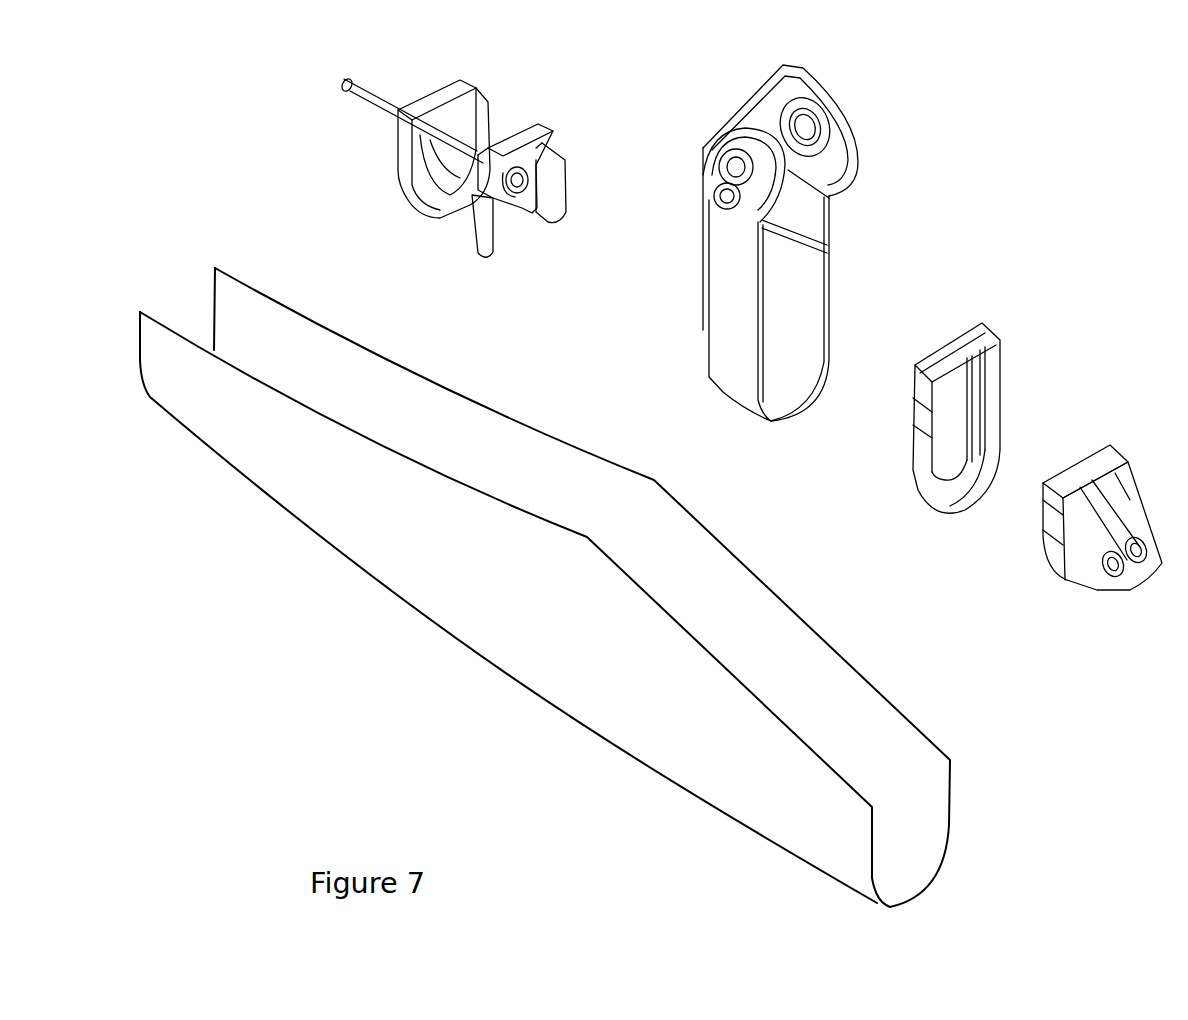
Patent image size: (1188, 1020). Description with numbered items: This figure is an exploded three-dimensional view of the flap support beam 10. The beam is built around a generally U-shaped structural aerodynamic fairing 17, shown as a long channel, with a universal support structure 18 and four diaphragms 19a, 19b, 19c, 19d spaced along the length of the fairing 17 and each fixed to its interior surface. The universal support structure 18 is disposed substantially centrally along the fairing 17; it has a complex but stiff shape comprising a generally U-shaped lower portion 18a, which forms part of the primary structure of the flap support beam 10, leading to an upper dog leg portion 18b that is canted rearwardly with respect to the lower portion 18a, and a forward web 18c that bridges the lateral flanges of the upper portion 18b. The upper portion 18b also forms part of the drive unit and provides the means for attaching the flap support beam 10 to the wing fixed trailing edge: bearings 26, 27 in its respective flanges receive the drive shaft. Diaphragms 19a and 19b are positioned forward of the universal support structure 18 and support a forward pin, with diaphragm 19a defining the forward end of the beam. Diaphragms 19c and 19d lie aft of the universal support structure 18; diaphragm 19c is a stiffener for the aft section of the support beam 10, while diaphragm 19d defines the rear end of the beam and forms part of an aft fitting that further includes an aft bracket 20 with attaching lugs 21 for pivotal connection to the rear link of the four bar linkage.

The flap support beam 10 is at (291, 589).
The structural aerodynamic fairing 17 is at (892, 762).
The universal support structure 18 is at (803, 328).
The lower U-shaped portion 18a is at (735, 337).
The upper dog leg portion 18b is at (825, 180).
The forward web 18c is at (750, 93).
The diaphragm 19a is at (468, 130).
The diaphragm 19b is at (548, 187).
The diaphragm 19c is at (990, 397).
The diaphragm 19d is at (1088, 465).
The aft bracket 20 is at (1080, 553).
The attaching lugs 21 is at (1130, 552).
The bearing 26 is at (730, 158).
The bearing 27 is at (820, 132).